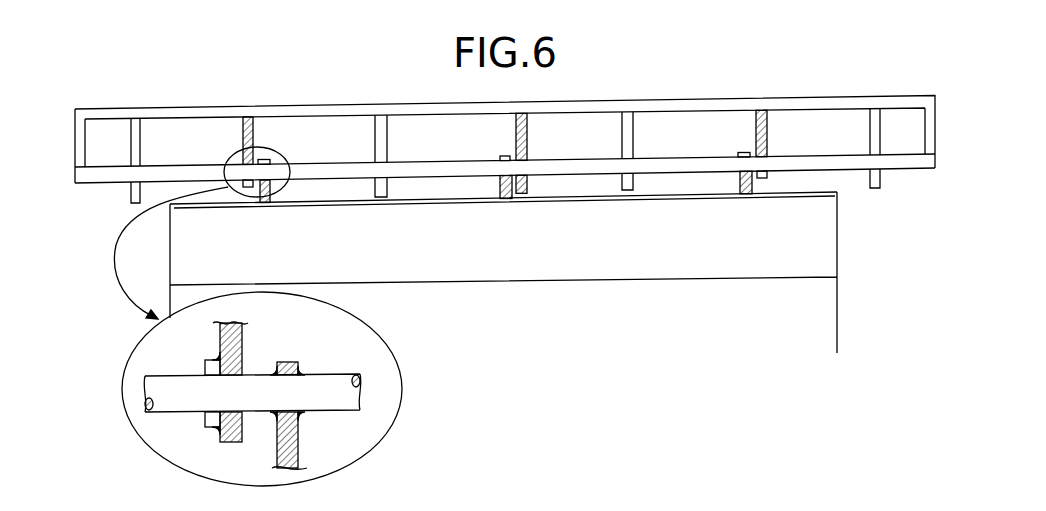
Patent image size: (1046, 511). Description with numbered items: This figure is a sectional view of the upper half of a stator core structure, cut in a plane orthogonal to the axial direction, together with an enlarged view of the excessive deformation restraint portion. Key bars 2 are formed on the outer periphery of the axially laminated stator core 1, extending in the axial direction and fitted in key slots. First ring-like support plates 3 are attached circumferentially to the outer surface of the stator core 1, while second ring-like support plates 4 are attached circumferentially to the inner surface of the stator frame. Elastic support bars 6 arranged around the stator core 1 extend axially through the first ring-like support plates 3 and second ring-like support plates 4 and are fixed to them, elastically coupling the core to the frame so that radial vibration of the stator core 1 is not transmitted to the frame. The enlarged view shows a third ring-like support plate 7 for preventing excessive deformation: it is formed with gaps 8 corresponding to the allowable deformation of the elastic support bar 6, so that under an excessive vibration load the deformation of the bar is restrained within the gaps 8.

The stator core 1 is at (838, 250).
The key bar 2 is at (838, 193).
The first ring-like support plate 3 is at (288, 190).
The second ring-like support plate 4 is at (390, 135).
The elastic support bar 6 is at (107, 183).
The ring-like support plate for preventing excessive deformation 7 is at (255, 136).
The gap 8 is at (205, 372).